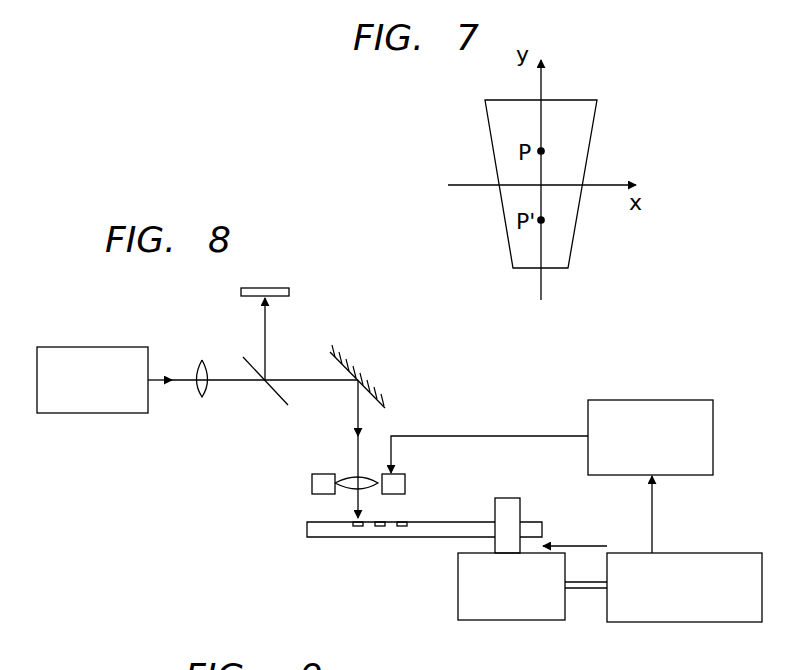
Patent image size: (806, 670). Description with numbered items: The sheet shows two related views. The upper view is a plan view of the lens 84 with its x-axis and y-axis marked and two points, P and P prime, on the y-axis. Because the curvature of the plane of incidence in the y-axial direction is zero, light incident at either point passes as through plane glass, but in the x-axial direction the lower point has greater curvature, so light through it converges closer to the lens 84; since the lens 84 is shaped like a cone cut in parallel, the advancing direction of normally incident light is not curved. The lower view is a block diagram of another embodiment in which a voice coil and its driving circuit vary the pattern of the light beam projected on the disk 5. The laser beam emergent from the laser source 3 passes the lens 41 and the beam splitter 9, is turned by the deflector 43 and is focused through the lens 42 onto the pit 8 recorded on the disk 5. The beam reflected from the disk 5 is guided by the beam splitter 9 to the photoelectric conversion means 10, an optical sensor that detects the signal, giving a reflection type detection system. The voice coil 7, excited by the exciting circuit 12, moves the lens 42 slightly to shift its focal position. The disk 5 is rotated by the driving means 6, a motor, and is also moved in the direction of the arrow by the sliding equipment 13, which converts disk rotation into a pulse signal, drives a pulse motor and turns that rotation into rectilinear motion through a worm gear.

In FIG. 7, the lens 84 is at (590, 137).
In FIG. 8, the laser source 3 is at (118, 347).
In FIG. 8, the lens 41 is at (203, 360).
In FIG. 8, the beam splitter 9 is at (280, 398).
In FIG. 8, the photoelectric conversion means 10 is at (280, 288).
In FIG. 8, the deflector 43 is at (340, 352).
In FIG. 8, the lens 42 is at (345, 477).
In FIG. 8, the voice coil 7 is at (312, 485).
In FIG. 8, the disk 5 is at (342, 537).
In FIG. 8, the pit 8 is at (362, 537).
In FIG. 8, the exciting circuit 12 is at (662, 400).
In FIG. 8, the sliding equipment 13 is at (710, 553).
In FIG. 8, the means for driving the disk 6 is at (528, 620).